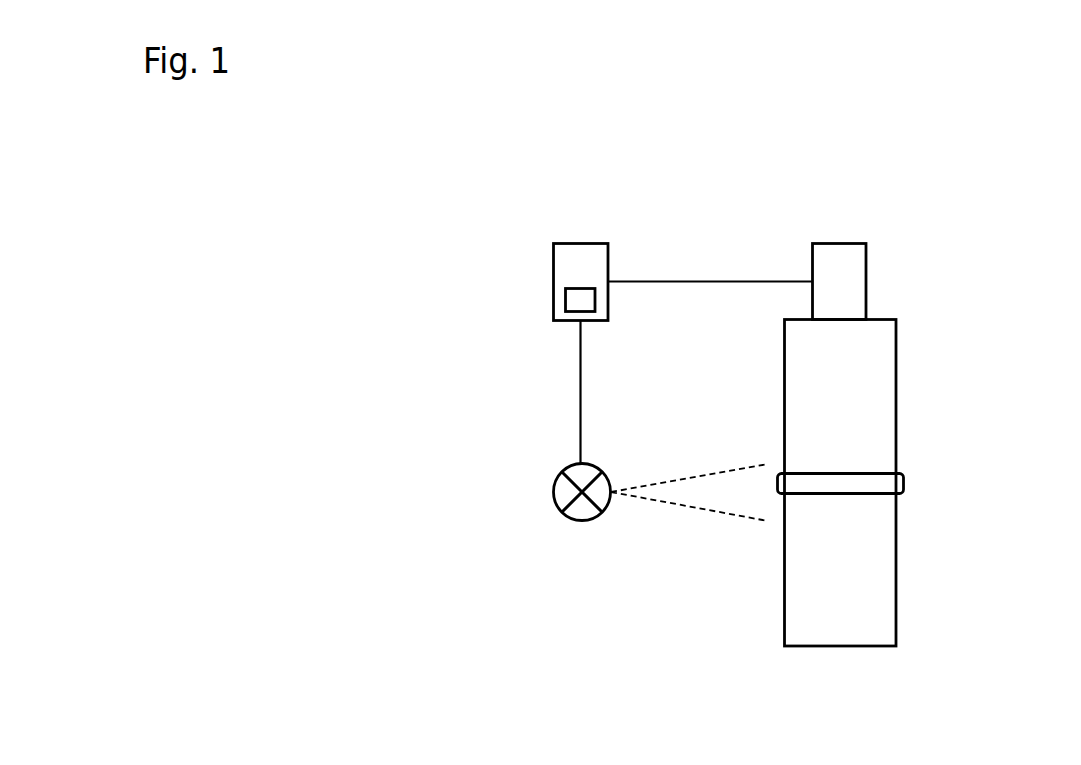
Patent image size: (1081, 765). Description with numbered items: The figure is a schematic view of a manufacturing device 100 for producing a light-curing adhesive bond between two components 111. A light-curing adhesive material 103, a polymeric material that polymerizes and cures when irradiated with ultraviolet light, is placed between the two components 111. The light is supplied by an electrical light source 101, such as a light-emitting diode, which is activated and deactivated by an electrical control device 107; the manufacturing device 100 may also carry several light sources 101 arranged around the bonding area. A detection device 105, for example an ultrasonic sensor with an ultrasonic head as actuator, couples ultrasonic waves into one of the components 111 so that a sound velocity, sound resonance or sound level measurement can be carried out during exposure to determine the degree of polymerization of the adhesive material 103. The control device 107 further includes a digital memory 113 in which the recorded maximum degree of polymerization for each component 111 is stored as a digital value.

The manufacturing device 100 is at (762, 170).
The electrical light source 101 is at (553, 493).
The light-curing adhesive material 103 is at (887, 482).
The detection device 105 is at (840, 282).
The electrical control device 107 is at (578, 263).
The components 111 is at (867, 390).
The digital memory 113 is at (578, 303).